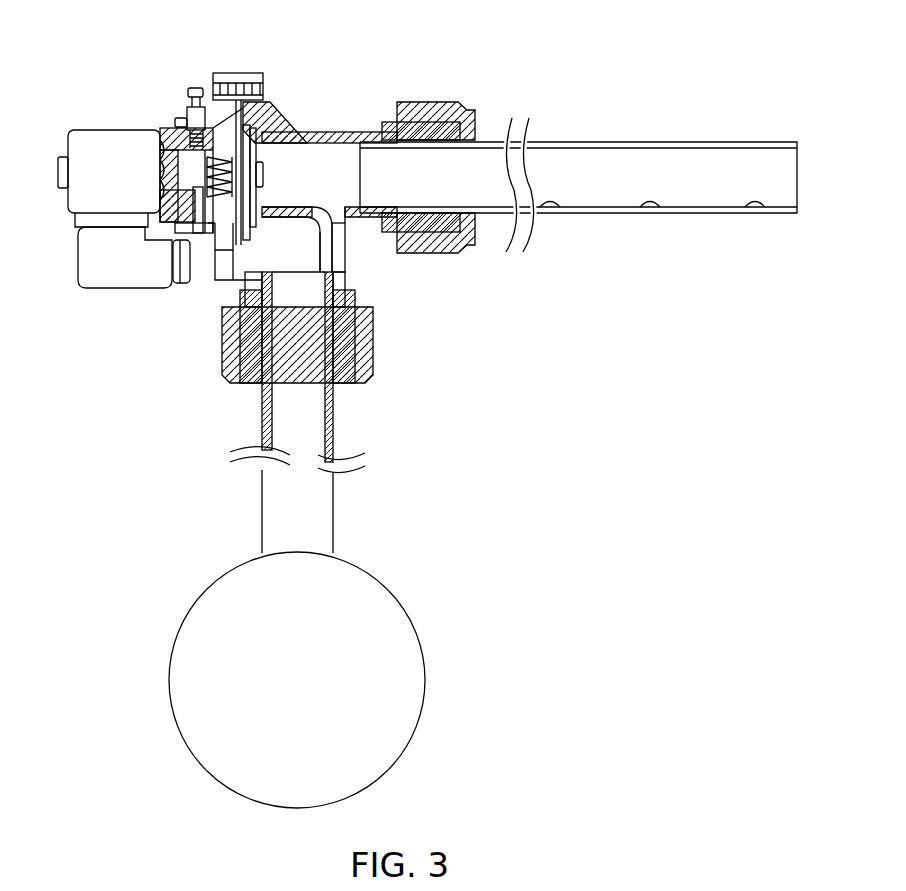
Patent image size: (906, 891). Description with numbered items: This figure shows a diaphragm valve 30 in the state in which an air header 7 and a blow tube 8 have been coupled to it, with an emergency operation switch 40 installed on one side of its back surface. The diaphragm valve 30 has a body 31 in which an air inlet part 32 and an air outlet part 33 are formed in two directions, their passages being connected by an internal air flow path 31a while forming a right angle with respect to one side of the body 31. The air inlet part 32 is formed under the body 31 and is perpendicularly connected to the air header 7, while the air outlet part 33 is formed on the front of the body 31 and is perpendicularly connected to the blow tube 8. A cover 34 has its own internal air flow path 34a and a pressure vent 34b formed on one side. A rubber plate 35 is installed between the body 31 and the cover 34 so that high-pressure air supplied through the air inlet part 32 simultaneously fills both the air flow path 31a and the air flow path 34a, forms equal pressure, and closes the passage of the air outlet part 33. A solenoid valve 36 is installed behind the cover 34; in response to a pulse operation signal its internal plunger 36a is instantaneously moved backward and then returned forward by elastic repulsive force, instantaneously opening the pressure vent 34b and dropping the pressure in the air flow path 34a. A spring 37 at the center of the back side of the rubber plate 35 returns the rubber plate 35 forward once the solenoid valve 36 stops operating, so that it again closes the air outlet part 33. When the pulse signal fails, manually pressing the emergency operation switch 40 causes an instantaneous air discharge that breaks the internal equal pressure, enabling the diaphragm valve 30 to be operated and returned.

The air header 7 is at (427, 685).
The blow tube 8 is at (712, 142).
The diaphragm valve 30 is at (212, 268).
The body 31 is at (345, 130).
The air flow path 31a is at (265, 115).
The air inlet part 32 is at (355, 320).
The air outlet part 33 is at (410, 128).
The cover 34 is at (167, 240).
The air flow path 34a is at (205, 128).
The pressure vent 34b is at (187, 278).
The rubber plate 35 is at (250, 228).
The solenoid valve 36 is at (80, 192).
The plunger 36a is at (153, 173).
The spring 37 is at (250, 135).
The emergency operation switch 40 is at (172, 124).